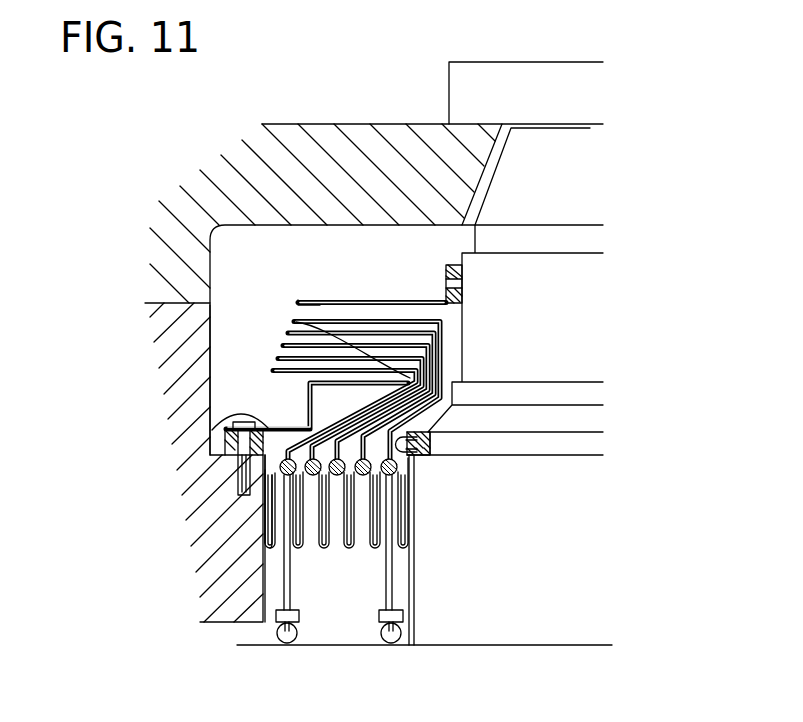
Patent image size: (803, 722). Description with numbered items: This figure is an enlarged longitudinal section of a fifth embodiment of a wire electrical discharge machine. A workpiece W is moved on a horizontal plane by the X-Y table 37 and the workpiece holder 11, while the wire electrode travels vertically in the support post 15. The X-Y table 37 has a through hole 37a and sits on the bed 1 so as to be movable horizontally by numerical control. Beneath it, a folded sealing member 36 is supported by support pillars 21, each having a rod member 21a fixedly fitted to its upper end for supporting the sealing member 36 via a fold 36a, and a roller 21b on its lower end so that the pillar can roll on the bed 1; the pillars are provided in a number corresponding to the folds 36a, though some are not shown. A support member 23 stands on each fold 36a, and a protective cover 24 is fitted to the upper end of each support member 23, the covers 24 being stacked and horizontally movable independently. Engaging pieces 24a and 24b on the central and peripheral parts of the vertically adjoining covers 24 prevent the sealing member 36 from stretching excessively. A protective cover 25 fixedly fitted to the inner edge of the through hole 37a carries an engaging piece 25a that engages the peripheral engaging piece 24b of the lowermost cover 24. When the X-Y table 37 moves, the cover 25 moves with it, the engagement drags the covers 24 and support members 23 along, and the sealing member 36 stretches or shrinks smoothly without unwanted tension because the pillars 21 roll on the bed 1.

The workpiece W is at (566, 96).
The workpiece holder 11 is at (182, 237).
The support post 15 is at (572, 259).
The protective cover 24 is at (386, 302).
The engaging piece 24a is at (441, 304).
The engaging piece 24b is at (299, 302).
The protective cover 25 is at (212, 431).
The engaging piece 25a is at (296, 322).
The support member 23 is at (340, 426).
The X-Y table 37 is at (192, 392).
The through hole 37a is at (218, 349).
The sealing member 36 is at (258, 516).
The fold 36a is at (272, 459).
The support pillar 21 is at (291, 588).
The rod member 21a is at (258, 481).
The roller 21b is at (399, 638).
The bed 1 is at (255, 641).